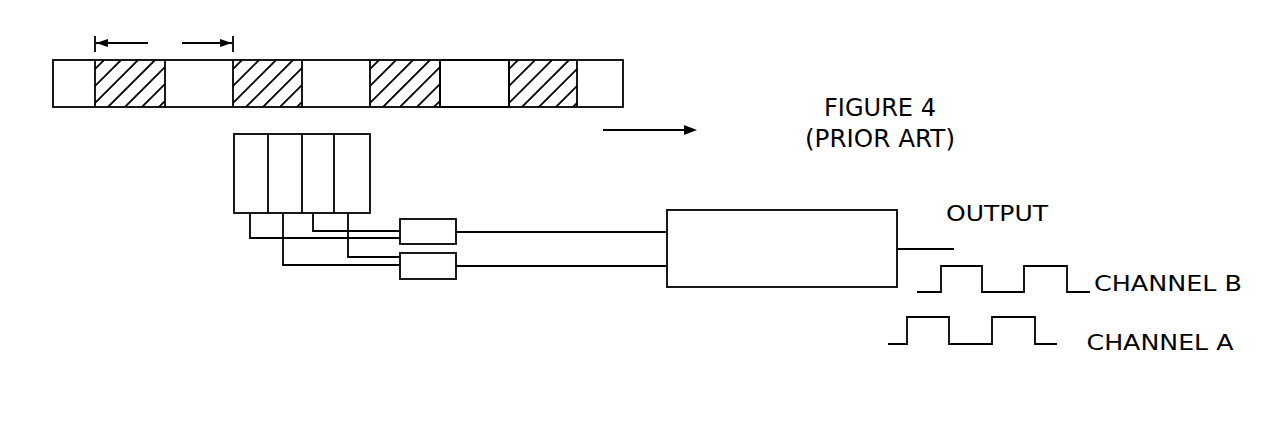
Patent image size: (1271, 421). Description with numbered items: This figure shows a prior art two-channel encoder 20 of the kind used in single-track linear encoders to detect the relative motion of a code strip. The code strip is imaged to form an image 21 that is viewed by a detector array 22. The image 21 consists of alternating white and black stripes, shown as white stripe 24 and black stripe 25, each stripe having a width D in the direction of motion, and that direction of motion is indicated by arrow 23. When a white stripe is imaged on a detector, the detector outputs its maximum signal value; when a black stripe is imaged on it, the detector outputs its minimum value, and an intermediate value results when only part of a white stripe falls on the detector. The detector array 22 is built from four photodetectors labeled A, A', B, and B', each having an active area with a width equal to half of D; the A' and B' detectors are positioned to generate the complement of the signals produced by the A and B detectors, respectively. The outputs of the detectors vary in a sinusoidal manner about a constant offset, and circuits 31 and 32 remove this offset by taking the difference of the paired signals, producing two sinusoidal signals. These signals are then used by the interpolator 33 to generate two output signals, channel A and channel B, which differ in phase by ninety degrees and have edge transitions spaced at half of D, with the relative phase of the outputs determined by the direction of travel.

The encoder 20 is at (738, 71).
The image 21 is at (82, 108).
The detector array 22 is at (233, 173).
The arrow 23 is at (632, 134).
The white stripe 24 is at (465, 108).
The black stripe 25 is at (548, 108).
The circuit 31 is at (437, 220).
The circuit 32 is at (428, 280).
The interpolator 33 is at (772, 277).